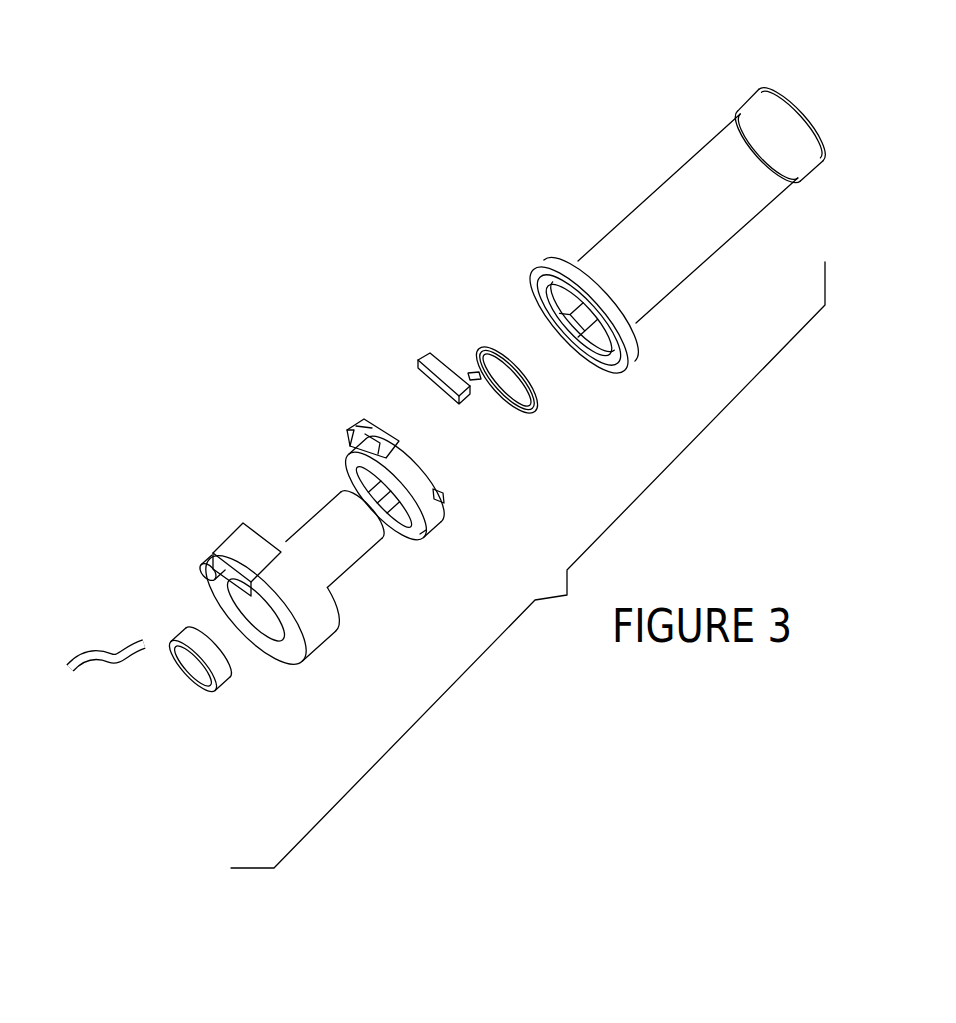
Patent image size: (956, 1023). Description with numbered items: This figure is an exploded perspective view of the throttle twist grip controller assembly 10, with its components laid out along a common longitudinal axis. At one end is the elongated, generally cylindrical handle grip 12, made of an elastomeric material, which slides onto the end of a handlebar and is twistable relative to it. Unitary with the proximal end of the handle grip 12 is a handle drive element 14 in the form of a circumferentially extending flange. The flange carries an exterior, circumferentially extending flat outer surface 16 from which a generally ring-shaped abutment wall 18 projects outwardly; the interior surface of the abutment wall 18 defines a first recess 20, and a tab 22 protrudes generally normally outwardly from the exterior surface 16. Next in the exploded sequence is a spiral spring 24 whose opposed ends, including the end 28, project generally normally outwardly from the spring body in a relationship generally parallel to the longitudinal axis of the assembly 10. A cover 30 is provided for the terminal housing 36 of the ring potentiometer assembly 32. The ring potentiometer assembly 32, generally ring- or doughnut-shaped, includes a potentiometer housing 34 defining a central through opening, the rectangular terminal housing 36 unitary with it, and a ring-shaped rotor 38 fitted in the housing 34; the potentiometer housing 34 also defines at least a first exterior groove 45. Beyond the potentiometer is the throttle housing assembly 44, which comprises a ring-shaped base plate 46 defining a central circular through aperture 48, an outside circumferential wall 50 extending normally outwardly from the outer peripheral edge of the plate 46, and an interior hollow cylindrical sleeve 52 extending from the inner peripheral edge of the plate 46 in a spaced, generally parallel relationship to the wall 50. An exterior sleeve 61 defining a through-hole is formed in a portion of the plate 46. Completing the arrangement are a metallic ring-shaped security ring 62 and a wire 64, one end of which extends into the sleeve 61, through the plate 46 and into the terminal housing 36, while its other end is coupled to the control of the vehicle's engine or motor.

The throttle twist grip controller assembly 10 is at (383, 202).
The handle grip 12 is at (678, 167).
The handle drive element 14 is at (624, 300).
The flat outer surface 16 is at (537, 283).
The abutment wall 18 is at (614, 360).
The first recess 20 is at (558, 335).
The tab 22 is at (585, 322).
The spiral spring 24 is at (459, 328).
The end of spiral spring 28 is at (470, 375).
The cover 30 is at (417, 365).
The ring potentiometer assembly 32 is at (373, 514).
The potentiometer housing 34 is at (432, 489).
The terminal housing 36 is at (363, 421).
The rotor 38 is at (356, 482).
The throttle housing assembly 44 is at (236, 651).
The first exterior groove 45 is at (420, 534).
The base plate 46 is at (295, 680).
The central through aperture 48 is at (245, 607).
The outside circumferential wall 50 is at (313, 633).
The sleeve 52 is at (317, 532).
The exterior sleeve 61 is at (206, 564).
The security ring 62 is at (187, 677).
The wire 64 is at (103, 664).